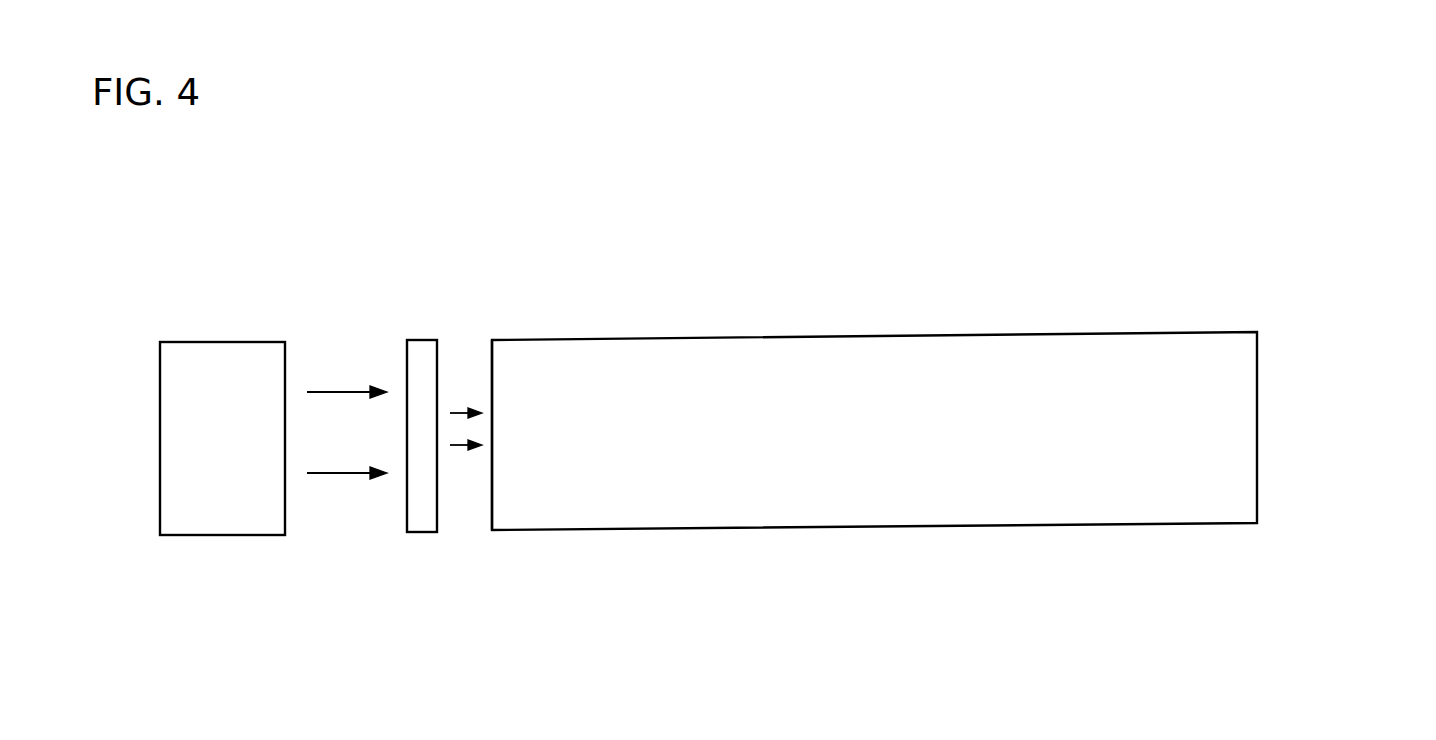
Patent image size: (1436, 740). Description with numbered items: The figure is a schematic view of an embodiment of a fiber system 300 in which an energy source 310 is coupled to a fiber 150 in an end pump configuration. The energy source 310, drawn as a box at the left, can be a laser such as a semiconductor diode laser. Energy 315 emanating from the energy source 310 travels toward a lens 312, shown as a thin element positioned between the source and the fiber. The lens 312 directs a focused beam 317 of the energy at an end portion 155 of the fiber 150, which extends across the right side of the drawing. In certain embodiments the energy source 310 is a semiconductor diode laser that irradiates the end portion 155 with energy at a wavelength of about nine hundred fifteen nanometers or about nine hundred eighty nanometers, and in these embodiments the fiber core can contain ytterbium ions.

The system 300 is at (1360, 415).
The energy source 310 is at (244, 452).
The lens 312 is at (415, 538).
The energy 315 is at (335, 382).
The focused beam 317 is at (458, 483).
The fiber 150 is at (897, 446).
The end portion 155 is at (500, 330).